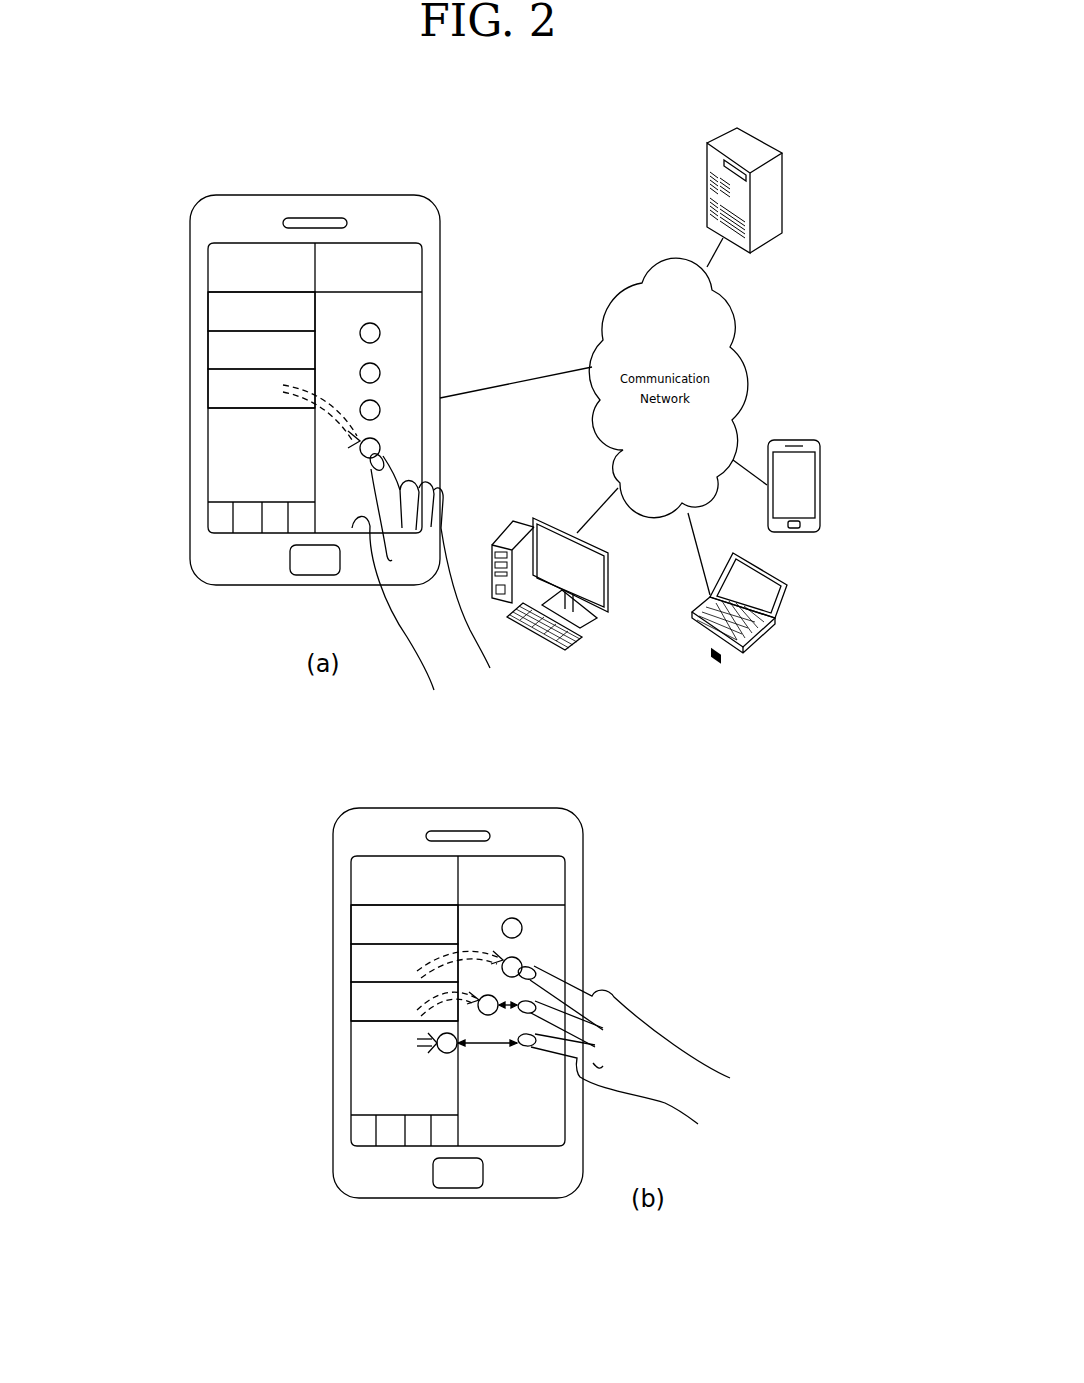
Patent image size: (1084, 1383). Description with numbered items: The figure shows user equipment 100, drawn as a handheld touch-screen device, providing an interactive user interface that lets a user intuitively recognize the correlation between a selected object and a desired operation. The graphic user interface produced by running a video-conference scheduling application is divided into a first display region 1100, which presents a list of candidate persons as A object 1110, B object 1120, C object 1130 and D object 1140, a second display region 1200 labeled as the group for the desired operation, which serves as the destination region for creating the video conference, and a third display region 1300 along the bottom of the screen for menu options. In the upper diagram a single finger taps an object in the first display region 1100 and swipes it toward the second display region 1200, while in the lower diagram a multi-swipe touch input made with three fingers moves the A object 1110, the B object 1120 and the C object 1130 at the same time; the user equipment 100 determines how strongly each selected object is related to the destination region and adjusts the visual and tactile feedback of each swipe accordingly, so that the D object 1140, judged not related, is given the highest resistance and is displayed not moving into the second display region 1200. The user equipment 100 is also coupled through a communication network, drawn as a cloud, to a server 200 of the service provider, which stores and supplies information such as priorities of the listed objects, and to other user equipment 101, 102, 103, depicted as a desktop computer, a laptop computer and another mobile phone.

The user equipment 100 is at (223, 195).
The first display region 1100 is at (257, 243).
The A object 1110 is at (215, 310).
The B object 1120 is at (215, 349).
The C object 1130 is at (215, 388).
The D object 1140 is at (215, 427).
The second display region 1200 is at (381, 243).
The third display region 1300 is at (221, 537).
The server 200 is at (764, 143).
The other user equipment 101 is at (598, 551).
The other user equipment 102 is at (773, 575).
The other user equipment 103 is at (800, 437).